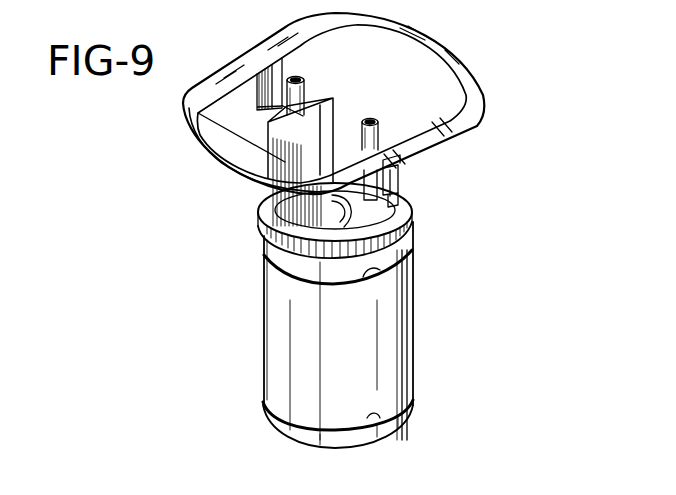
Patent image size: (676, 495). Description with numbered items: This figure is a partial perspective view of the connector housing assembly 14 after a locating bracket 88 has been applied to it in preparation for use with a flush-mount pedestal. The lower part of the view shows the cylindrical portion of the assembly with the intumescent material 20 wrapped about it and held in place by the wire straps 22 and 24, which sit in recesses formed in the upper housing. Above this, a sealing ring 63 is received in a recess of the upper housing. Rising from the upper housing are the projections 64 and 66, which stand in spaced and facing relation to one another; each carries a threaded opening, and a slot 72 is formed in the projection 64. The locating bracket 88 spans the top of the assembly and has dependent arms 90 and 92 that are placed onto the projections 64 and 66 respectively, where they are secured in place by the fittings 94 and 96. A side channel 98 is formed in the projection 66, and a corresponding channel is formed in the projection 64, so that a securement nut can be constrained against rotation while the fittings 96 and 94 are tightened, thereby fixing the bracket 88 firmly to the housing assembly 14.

The connector housing assembly 14 is at (440, 283).
The intumescent material 20 is at (366, 371).
The wire strap 22 is at (357, 283).
The wire strap 24 is at (350, 428).
The sealing ring 63 is at (258, 200).
The projection 64 is at (336, 122).
The projection 66 is at (403, 181).
The slot 72 is at (246, 164).
The locating bracket 88 is at (447, 35).
The dependent arm 90 is at (260, 92).
The dependent arm 92 is at (406, 165).
The fitting 94 is at (187, 113).
The fitting 96 is at (387, 128).
The side channel 98 is at (405, 185).